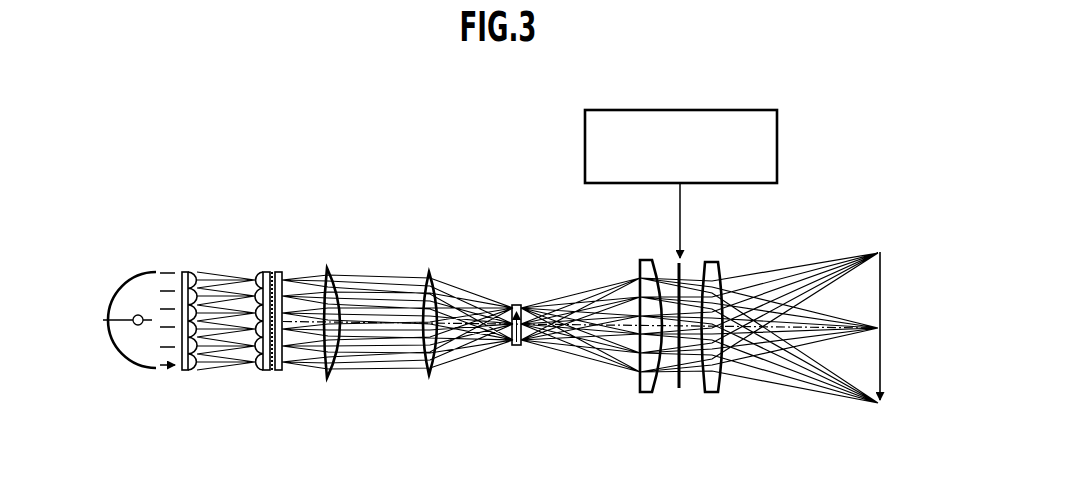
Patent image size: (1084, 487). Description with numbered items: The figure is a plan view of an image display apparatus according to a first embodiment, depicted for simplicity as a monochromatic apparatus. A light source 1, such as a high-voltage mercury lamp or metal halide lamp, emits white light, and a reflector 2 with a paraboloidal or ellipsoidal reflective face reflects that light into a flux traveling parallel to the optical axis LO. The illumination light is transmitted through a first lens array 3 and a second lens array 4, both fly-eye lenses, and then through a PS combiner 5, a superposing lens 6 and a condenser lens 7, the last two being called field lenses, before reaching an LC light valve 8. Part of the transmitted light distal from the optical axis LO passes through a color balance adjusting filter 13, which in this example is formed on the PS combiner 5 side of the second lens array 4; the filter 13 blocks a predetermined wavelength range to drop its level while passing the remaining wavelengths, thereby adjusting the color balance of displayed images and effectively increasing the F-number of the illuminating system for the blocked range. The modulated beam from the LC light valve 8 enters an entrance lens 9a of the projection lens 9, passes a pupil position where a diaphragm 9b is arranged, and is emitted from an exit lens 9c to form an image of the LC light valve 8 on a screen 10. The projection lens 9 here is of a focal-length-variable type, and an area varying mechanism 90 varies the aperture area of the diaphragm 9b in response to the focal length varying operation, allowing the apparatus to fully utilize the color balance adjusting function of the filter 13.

The light source 1 is at (132, 318).
The reflector 2 is at (124, 290).
The first lens array 3 is at (185, 270).
The second lens array 4 is at (259, 269).
The PS combiner 5 is at (285, 270).
The superposing lens 6 is at (330, 266).
The condenser lens 7 is at (428, 271).
The LC light valve 8 is at (517, 303).
The projection lens 9 is at (694, 330).
The entrance lens 9a is at (638, 386).
The diaphragm 9b is at (677, 383).
The exit lens 9c is at (707, 393).
The screen 10 is at (882, 292).
The color balance adjusting filter 13 is at (271, 265).
The area varying mechanism 90 is at (682, 110).
The optical axis LO is at (800, 330).